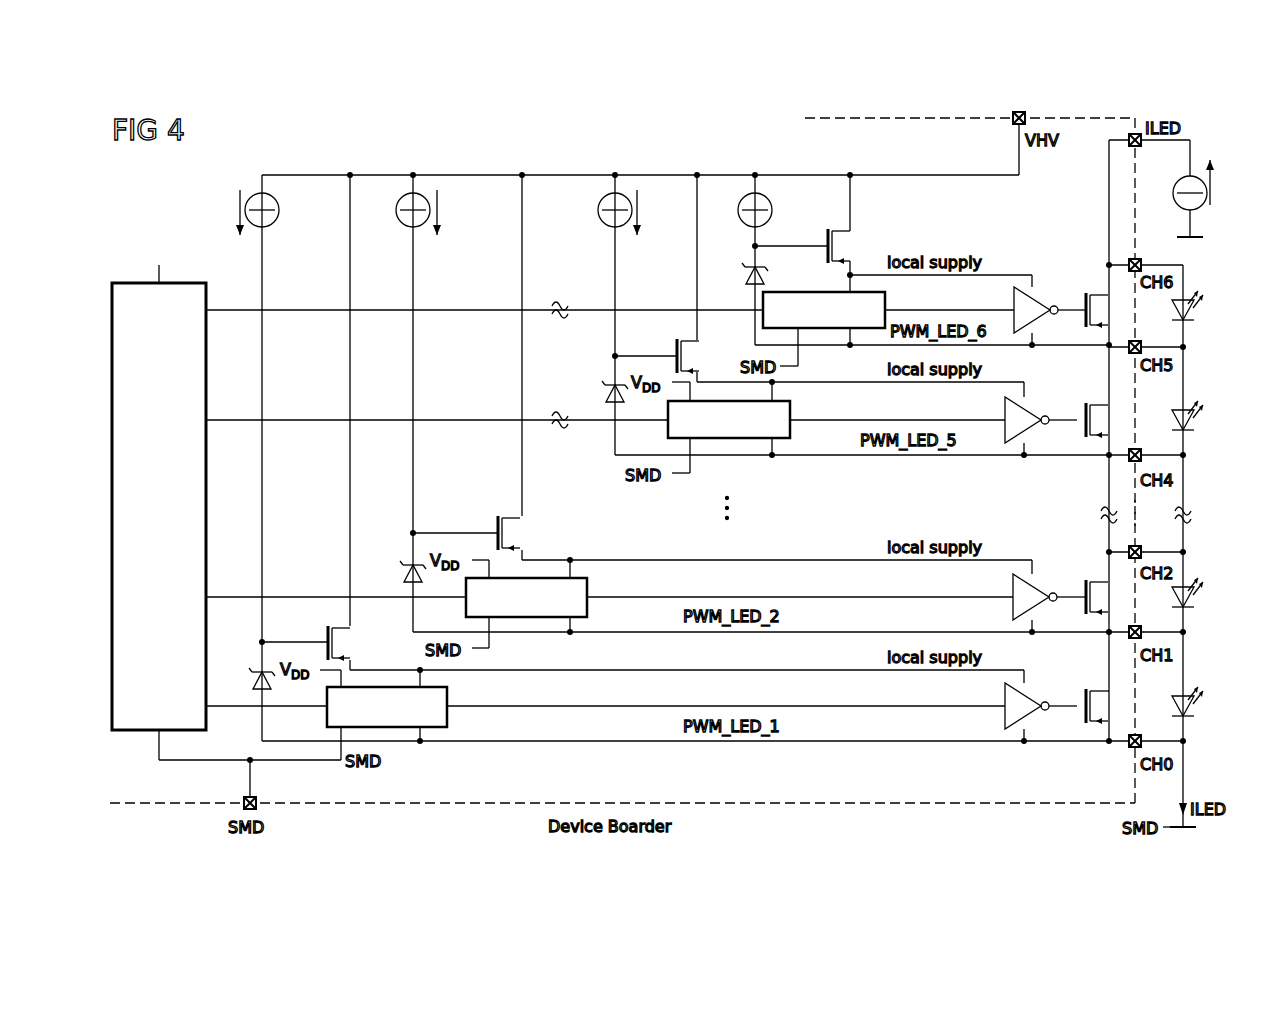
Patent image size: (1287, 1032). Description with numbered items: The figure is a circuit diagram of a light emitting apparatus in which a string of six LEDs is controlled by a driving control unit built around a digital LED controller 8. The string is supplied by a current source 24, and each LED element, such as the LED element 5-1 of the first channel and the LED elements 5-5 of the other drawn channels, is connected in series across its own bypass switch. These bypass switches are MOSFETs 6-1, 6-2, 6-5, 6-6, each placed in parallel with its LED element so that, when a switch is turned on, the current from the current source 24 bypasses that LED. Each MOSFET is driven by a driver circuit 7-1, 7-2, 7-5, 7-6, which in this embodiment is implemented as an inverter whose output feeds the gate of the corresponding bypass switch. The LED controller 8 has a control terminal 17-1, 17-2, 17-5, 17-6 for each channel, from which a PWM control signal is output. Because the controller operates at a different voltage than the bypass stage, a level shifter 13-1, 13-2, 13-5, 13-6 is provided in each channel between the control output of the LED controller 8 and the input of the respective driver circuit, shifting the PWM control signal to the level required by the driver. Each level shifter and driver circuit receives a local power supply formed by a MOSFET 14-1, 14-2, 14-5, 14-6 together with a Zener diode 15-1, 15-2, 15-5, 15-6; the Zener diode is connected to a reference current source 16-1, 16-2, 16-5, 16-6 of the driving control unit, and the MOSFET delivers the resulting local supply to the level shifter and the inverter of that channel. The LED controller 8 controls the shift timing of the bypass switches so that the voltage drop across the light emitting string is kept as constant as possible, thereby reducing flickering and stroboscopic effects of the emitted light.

The LED controller 8 is at (130, 282).
The control terminal 17-6 is at (208, 308).
The control terminal 17-5 is at (208, 418).
The control terminal 17-2 is at (208, 596).
The control terminal 17-1 is at (208, 708).
The reference current source 16-1 is at (274, 228).
The reference current source 16-2 is at (402, 226).
The reference current source 16-5 is at (602, 225).
The reference current source 16-6 is at (773, 209).
The MOSFET 14-1 is at (340, 652).
The MOSFET 14-2 is at (510, 541).
The MOSFET 14-5 is at (685, 359).
The MOSFET 14-6 is at (840, 248).
The Zener diode 15-1 is at (255, 672).
The Zener diode 15-2 is at (408, 563).
The Zener diode 15-5 is at (609, 385).
The Zener diode 15-6 is at (767, 274).
The level shifter 13-1 is at (450, 700).
The level shifter 13-2 is at (589, 590).
The level shifter 13-5 is at (792, 412).
The level shifter 13-6 is at (887, 305).
The driver circuit 7-1 is at (1030, 702).
The driver circuit 7-2 is at (1037, 594).
The driver circuit 7-5 is at (1030, 412).
The driver circuit 7-6 is at (1037, 302).
The MOSFET 6-1 is at (1084, 715).
The MOSFET 6-2 is at (1090, 580).
The MOSFET 6-5 is at (1084, 430).
The MOSFET 6-6 is at (1090, 292).
The LED element 5-1 is at (1193, 718).
The LED element 5-5 is at (1193, 321).
The current source 24 is at (1200, 207).